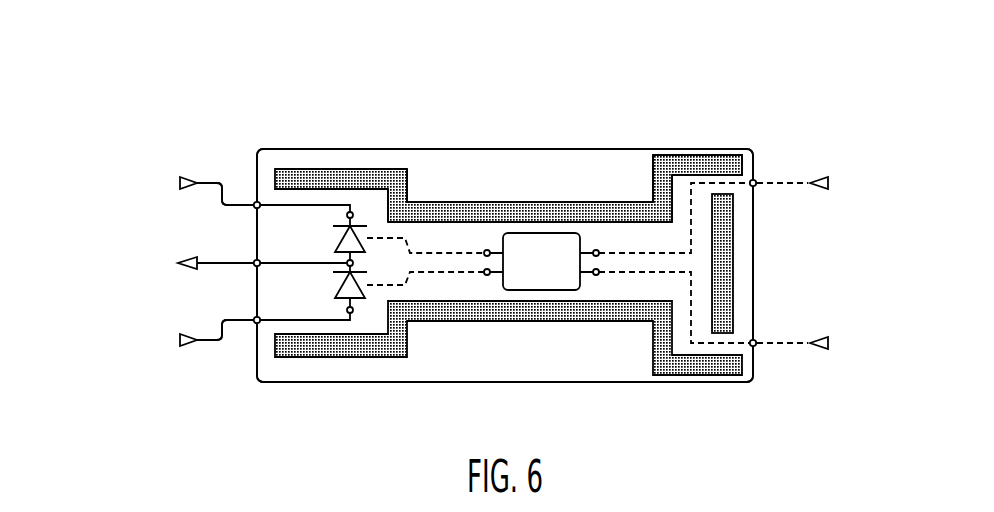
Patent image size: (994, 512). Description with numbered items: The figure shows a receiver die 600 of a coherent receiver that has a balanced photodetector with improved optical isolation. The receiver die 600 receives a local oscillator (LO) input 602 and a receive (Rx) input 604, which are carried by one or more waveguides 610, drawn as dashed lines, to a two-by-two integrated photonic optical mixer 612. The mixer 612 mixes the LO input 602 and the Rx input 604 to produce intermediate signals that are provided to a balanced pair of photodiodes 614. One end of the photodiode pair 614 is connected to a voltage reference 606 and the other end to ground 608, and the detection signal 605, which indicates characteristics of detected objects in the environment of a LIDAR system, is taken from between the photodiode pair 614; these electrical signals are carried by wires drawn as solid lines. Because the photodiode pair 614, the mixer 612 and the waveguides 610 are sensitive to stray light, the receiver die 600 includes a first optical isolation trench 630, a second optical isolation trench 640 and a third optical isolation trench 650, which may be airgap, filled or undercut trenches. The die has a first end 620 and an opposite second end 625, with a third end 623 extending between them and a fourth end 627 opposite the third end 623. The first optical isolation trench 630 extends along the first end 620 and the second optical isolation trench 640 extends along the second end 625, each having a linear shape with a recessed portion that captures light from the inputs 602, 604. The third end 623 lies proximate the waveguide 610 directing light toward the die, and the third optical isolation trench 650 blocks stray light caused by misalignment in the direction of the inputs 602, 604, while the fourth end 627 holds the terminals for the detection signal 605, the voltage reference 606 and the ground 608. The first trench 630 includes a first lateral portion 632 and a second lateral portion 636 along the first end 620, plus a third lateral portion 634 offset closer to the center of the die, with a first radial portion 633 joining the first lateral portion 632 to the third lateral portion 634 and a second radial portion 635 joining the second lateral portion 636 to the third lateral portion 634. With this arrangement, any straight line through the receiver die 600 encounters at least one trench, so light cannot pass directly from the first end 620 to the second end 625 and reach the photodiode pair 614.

The receiver die 600 is at (205, 98).
The local oscillator (LO) input 602 is at (820, 165).
The receive (Rx) input 604 is at (843, 317).
The detection signal 605 is at (125, 240).
The voltage reference 606 is at (155, 160).
The ground 608 is at (127, 335).
The waveguides 610 is at (630, 245).
The optical mixer 612 is at (513, 225).
The balanced pair of photodiodes 614 is at (310, 265).
The first end 620 is at (478, 112).
The third end 623 is at (837, 250).
The second end 625 is at (480, 410).
The fourth end 627 is at (68, 215).
The first optical isolation trench 630 is at (325, 157).
The first lateral portion 632 is at (363, 168).
The first radial portion 633 is at (408, 188).
The third lateral portion 634 is at (540, 203).
The second radial portion 635 is at (653, 183).
The second lateral portion 636 is at (685, 157).
The second optical isolation trench 640 is at (452, 350).
The third optical isolation trench 650 is at (742, 258).